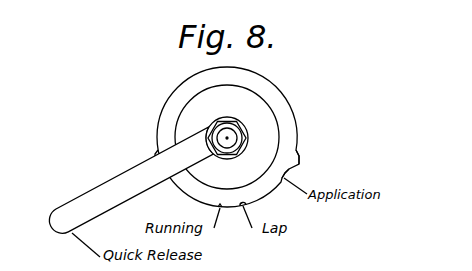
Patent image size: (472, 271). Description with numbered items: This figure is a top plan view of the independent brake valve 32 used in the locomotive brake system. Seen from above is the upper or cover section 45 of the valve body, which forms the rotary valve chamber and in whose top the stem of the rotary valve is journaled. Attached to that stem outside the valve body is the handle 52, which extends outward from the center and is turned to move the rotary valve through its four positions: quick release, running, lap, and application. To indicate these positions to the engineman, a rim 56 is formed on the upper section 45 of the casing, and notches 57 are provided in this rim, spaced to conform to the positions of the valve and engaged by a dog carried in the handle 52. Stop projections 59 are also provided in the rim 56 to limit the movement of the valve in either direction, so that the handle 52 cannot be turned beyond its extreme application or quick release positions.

The independent brake valve 32 is at (245, 137).
The upper or cover section 45 is at (227, 137).
The handle 52 is at (131, 180).
The rim 56 is at (263, 78).
The notches 57 is at (289, 172).
The stop projections 59 is at (298, 160).